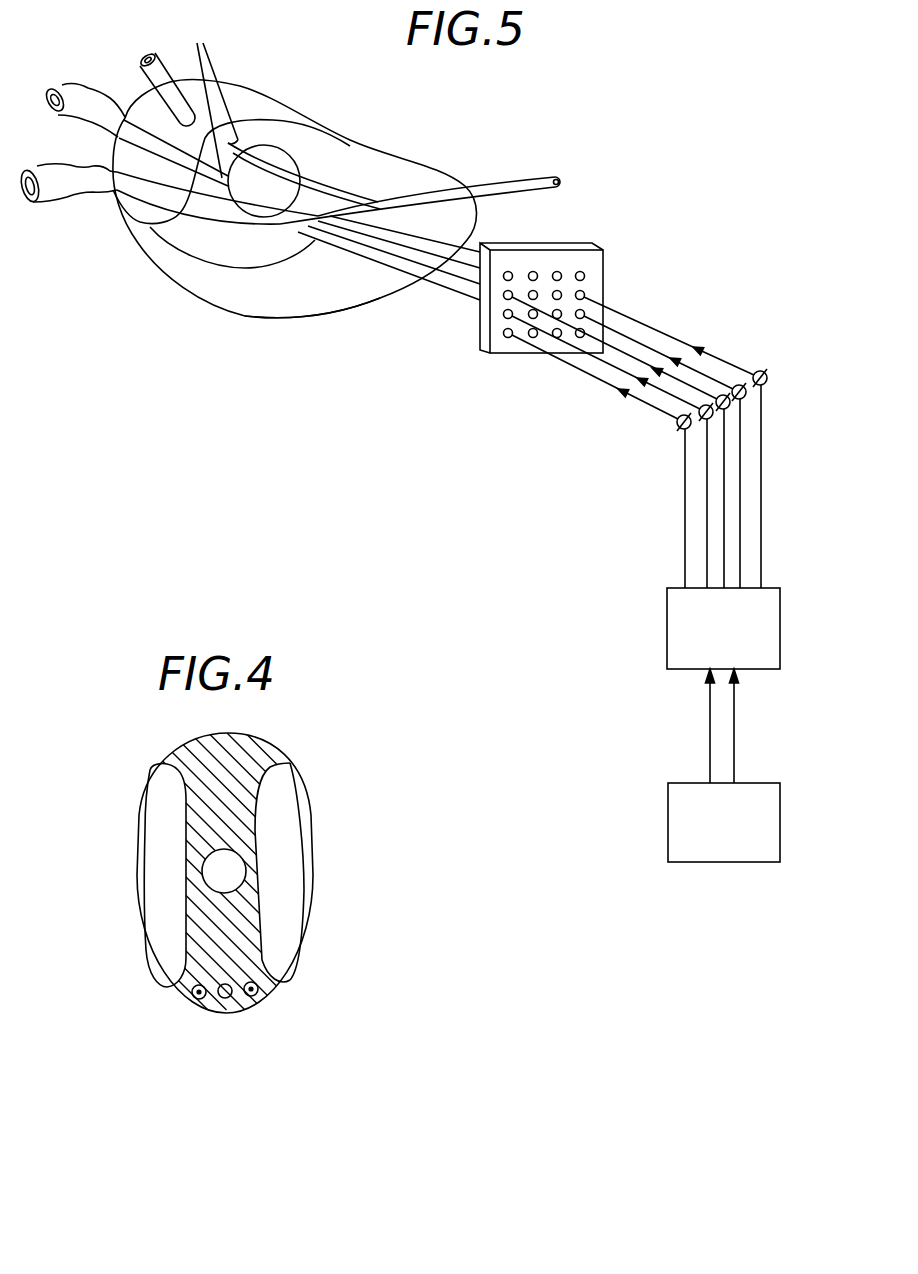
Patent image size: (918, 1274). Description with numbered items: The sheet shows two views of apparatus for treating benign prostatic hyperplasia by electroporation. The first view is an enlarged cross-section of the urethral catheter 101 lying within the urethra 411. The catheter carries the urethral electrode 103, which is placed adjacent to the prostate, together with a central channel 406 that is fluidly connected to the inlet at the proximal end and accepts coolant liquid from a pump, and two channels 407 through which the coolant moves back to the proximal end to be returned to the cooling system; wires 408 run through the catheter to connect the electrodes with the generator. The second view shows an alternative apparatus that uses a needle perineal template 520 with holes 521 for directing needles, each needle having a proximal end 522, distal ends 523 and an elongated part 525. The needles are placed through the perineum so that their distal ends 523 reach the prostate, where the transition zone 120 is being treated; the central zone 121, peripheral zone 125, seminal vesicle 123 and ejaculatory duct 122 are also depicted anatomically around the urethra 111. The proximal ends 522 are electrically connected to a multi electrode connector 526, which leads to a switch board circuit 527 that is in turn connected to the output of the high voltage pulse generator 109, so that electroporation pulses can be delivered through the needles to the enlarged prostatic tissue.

In FIG. 4, the urethral catheter 101 is at (220, 734).
In FIG. 4, the urethral electrode 103 is at (146, 820).
In FIG. 4, the channel 406 is at (212, 875).
In FIG. 4, the two channels 407 is at (280, 910).
In FIG. 4, the wires 408 is at (238, 997).
In FIG. 4, the urethra 411 is at (254, 996).
In FIG. 5, the generator 109 is at (688, 808).
In FIG. 5, the urethra 111 is at (527, 168).
In FIG. 5, the transition zone 120 is at (288, 192).
In FIG. 5, the central zone 121 is at (203, 240).
In FIG. 5, the ejaculatory duct 122 is at (282, 233).
In FIG. 5, the seminal vesicle 123 is at (93, 185).
In FIG. 5, the peripheral zone 125 is at (298, 308).
In FIG. 5, the needle perineal template 520 is at (593, 262).
In FIG. 5, the holes 521 is at (537, 271).
In FIG. 5, the proximal end 522 is at (652, 332).
In FIG. 5, the distal ends 523 is at (188, 97).
In FIG. 5, the elongated part 525 is at (463, 267).
In FIG. 5, the multi electrode connector 526 is at (663, 514).
In FIG. 5, the switch board circuit 527 is at (683, 626).